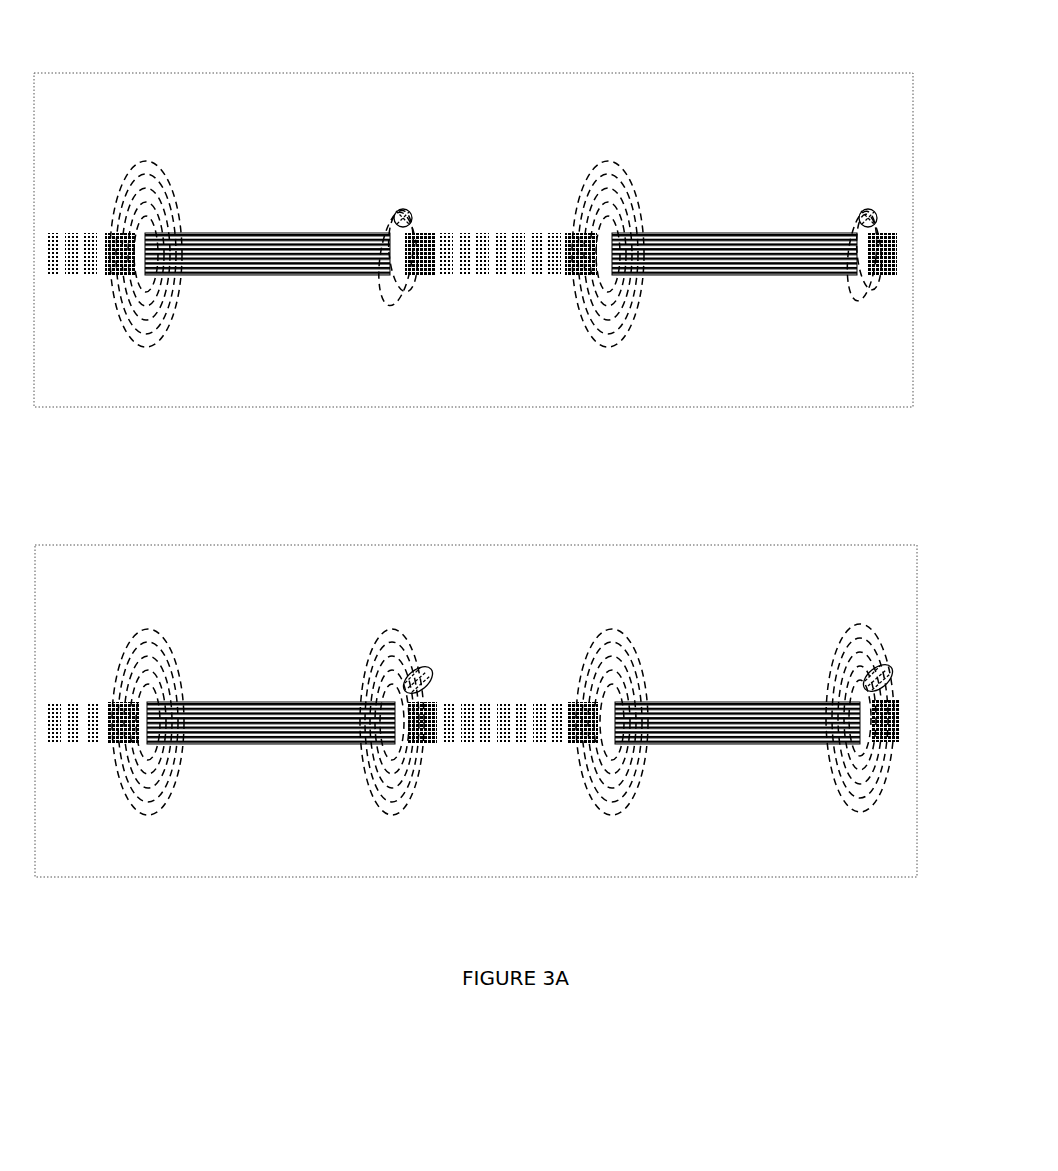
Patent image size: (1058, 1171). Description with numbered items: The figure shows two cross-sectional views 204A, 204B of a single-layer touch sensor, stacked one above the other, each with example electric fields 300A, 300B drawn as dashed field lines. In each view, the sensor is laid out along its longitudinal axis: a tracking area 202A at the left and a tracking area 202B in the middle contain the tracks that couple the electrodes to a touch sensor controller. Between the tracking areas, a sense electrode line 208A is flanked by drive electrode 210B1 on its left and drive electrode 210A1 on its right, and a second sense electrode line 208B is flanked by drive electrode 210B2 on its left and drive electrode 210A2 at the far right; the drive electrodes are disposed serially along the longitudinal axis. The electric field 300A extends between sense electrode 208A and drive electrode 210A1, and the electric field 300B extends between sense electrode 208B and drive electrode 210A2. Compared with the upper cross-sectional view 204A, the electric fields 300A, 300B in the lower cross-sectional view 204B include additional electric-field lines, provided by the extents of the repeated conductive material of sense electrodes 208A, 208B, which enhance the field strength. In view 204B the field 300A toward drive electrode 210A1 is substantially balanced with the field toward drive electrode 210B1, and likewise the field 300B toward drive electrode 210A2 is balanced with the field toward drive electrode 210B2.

The cross-sectional view 204A is at (706, 72).
The cross-sectional view 204B is at (710, 543).
The tracking area 202A is at (97, 221).
The tracking area 202B is at (561, 221).
The sense electrode line 208A is at (270, 229).
The sense electrode line 208B is at (712, 229).
The drive electrode 210B1 is at (104, 274).
The drive electrode 210A1 is at (436, 278).
The drive electrode 210B2 is at (563, 275).
The drive electrode 210A2 is at (887, 278).
The electric field 300A is at (405, 207).
The electric field 300B is at (868, 207).